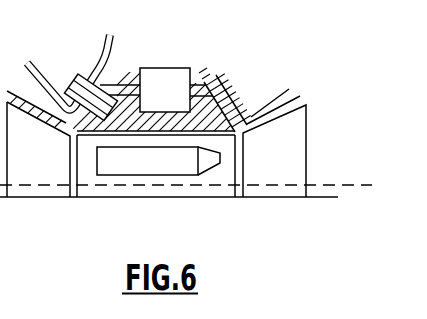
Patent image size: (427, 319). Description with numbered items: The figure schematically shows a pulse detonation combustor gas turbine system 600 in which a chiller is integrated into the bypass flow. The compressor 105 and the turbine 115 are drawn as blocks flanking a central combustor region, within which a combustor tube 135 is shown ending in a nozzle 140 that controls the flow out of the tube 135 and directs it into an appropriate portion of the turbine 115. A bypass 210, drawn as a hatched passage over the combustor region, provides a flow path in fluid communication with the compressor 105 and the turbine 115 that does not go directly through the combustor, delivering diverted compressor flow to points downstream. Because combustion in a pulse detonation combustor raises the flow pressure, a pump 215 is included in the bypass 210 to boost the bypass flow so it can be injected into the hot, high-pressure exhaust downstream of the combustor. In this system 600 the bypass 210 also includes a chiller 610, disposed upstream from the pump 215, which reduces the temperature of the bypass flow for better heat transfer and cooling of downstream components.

The system 600 is at (323, 105).
The compressor 105 is at (58, 172).
The turbine 115 is at (297, 174).
The combustor tube 135 is at (166, 170).
The nozzle 140 is at (214, 163).
The bypass 210 is at (226, 87).
The pump 215 is at (185, 98).
The chiller 610 is at (76, 77).